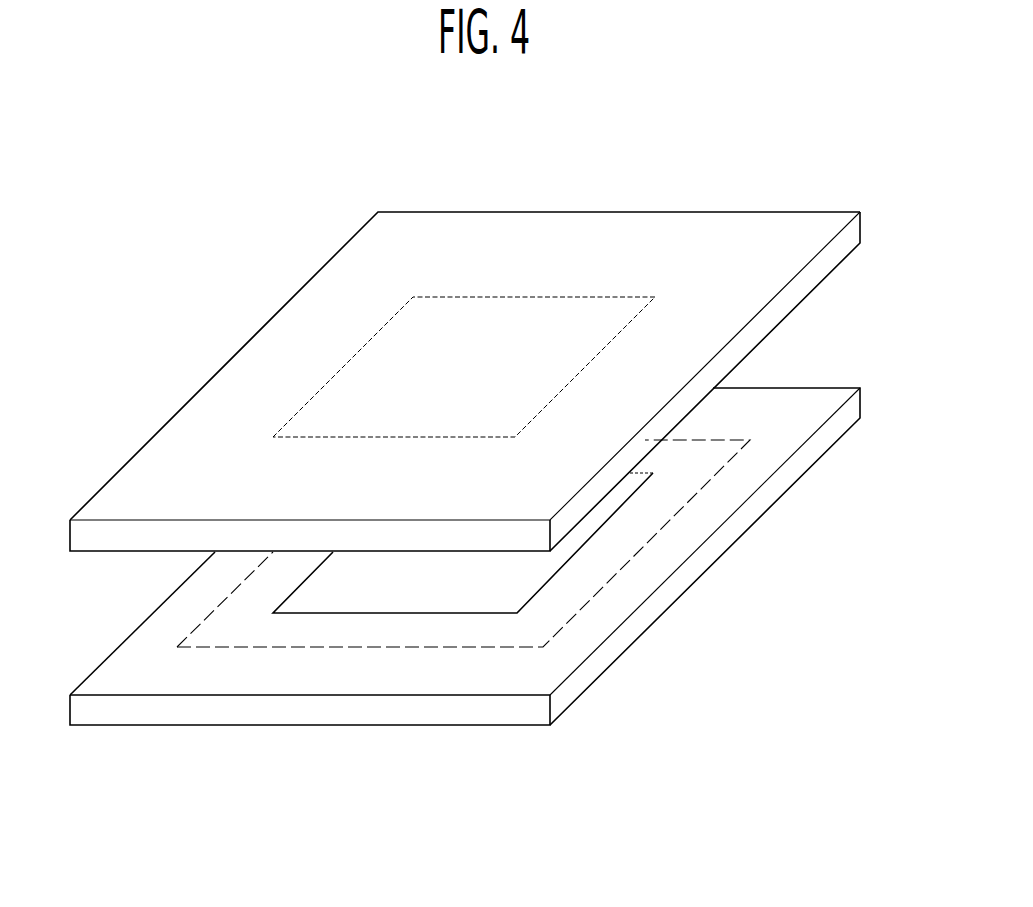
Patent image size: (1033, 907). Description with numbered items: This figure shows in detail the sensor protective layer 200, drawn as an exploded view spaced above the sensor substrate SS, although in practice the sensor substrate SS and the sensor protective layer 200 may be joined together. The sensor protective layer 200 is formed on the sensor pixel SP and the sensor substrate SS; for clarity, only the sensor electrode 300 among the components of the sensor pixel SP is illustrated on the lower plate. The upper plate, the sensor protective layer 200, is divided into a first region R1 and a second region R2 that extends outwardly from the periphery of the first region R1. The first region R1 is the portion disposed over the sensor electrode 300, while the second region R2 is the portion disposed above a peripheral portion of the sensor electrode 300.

The sensor protective layer 200 is at (490, 349).
The first region R1 is at (522, 313).
The second region R2 is at (665, 230).
The sensor electrode 300 is at (523, 575).
The sensor pixel SP is at (677, 497).
The sensor substrate SS is at (703, 572).